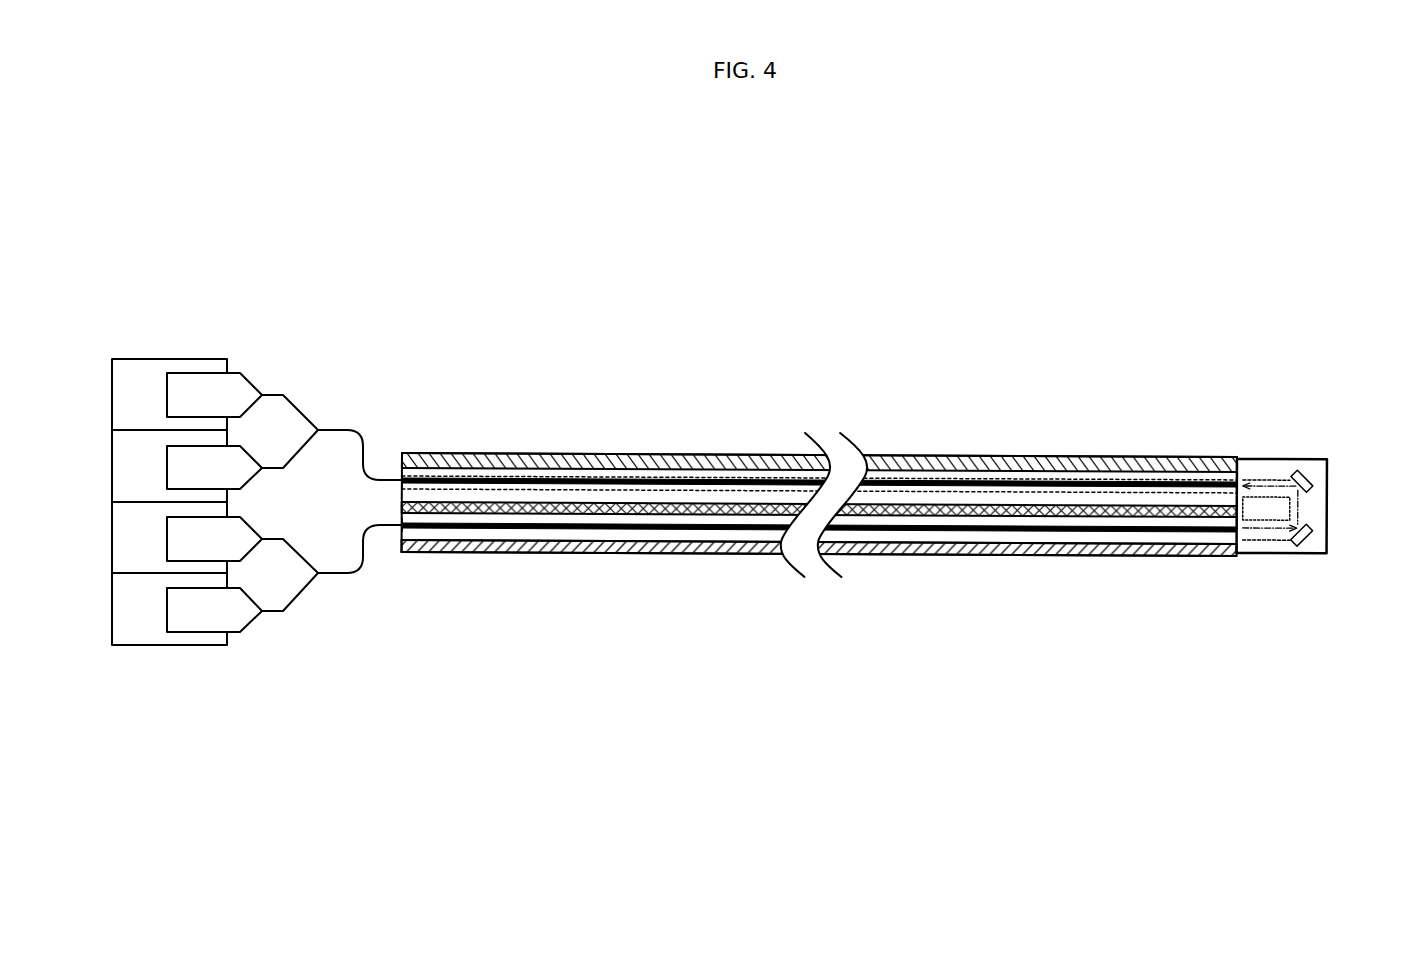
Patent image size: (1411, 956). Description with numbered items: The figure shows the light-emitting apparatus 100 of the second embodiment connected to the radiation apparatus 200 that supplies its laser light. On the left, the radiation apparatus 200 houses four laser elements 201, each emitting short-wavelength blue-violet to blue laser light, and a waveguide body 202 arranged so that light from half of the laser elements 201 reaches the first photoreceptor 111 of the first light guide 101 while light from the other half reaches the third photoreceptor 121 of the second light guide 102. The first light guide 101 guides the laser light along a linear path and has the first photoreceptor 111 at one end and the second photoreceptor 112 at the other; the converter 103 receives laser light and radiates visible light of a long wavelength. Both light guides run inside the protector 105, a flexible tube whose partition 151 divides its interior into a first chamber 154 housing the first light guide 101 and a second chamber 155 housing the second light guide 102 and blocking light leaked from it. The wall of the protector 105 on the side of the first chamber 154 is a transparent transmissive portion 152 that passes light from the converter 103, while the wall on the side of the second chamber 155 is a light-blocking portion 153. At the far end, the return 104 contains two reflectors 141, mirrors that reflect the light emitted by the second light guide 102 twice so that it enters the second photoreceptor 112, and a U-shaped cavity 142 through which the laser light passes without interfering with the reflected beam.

The light-emitting apparatus 100 is at (1092, 343).
The first light guide 101 is at (613, 480).
The second light guide 102 is at (648, 529).
The converter 103 is at (742, 477).
The return 104 is at (1276, 556).
The protector 105 is at (910, 397).
The first photoreceptor 111 is at (403, 477).
The second photoreceptor 112 is at (1237, 479).
The third photoreceptor 121 is at (403, 527).
The reflector 141 is at (1308, 470).
The cavity 142 is at (1316, 508).
The partition 151 is at (930, 505).
The transmissive portion 152 is at (968, 456).
The light-blocking portion 153 is at (1047, 550).
The first chamber 154 is at (958, 496).
The second chamber 155 is at (1010, 536).
The radiation apparatus 200 is at (165, 358).
The laser element 201 is at (246, 372).
The waveguide body 202 is at (259, 651).